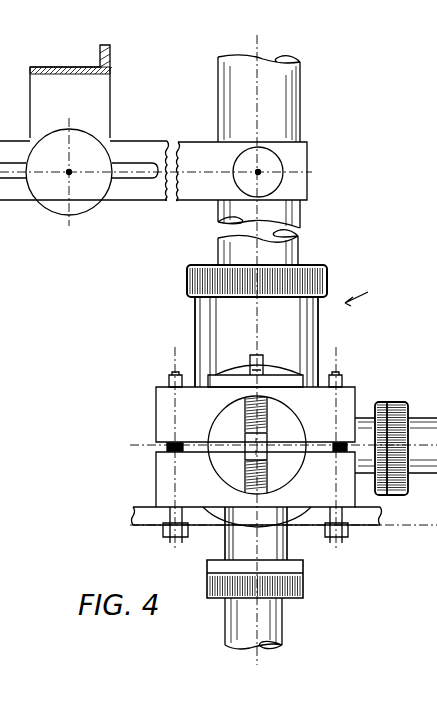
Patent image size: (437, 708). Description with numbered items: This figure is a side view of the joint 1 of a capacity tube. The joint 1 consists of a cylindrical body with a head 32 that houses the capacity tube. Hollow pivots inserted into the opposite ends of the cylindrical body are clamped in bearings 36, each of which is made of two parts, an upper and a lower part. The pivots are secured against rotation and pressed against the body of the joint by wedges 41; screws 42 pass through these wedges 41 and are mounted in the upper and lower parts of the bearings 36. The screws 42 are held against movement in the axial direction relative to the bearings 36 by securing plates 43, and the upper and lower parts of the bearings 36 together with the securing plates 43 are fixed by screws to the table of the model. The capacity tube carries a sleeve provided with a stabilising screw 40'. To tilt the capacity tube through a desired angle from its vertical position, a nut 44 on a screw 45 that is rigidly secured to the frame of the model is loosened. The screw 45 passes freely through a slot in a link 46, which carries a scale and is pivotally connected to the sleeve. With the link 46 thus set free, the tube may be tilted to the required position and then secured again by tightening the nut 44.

The joint 1 is at (362, 292).
The head 32 is at (308, 325).
The bearings 36 is at (157, 420).
The stabilising screw 40' is at (296, 170).
The wedges 41 is at (263, 453).
The screws 42 is at (245, 413).
The securing plates 43 is at (293, 380).
The nut 44 is at (53, 212).
The screw 45 is at (70, 171).
The link 46 is at (160, 193).